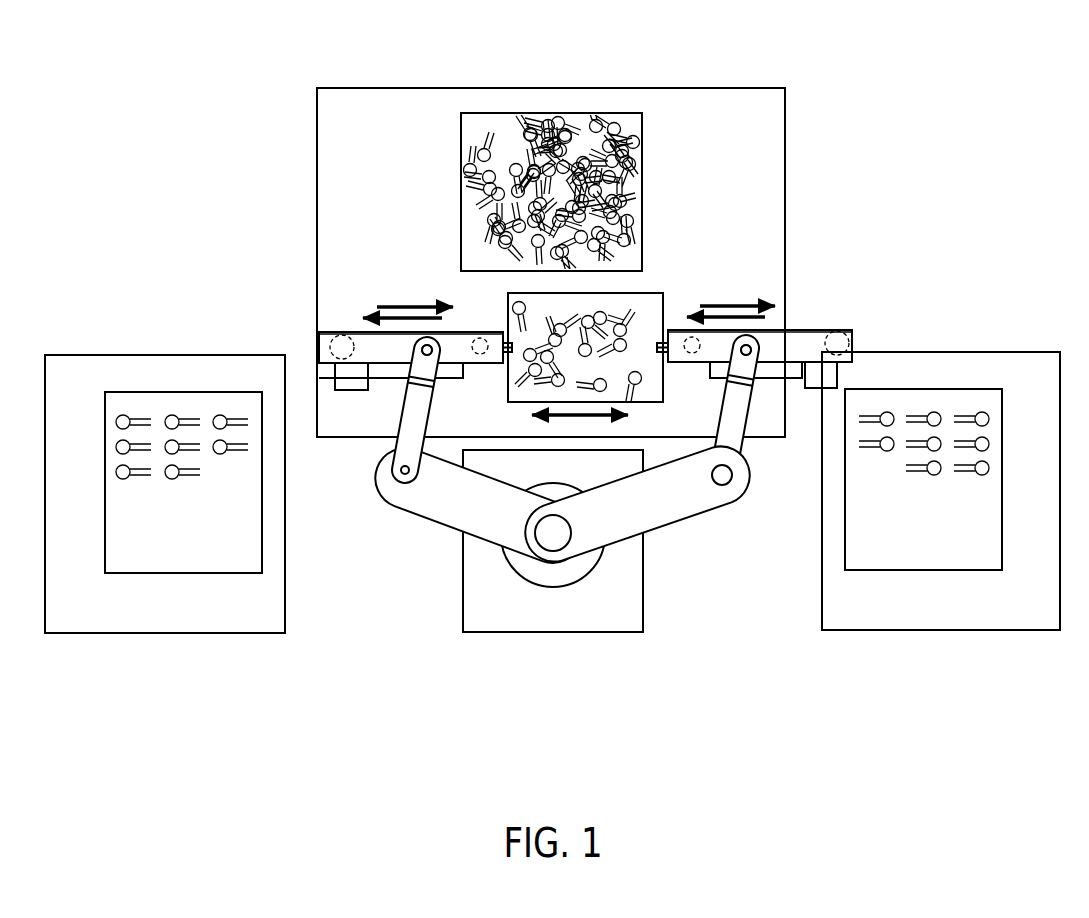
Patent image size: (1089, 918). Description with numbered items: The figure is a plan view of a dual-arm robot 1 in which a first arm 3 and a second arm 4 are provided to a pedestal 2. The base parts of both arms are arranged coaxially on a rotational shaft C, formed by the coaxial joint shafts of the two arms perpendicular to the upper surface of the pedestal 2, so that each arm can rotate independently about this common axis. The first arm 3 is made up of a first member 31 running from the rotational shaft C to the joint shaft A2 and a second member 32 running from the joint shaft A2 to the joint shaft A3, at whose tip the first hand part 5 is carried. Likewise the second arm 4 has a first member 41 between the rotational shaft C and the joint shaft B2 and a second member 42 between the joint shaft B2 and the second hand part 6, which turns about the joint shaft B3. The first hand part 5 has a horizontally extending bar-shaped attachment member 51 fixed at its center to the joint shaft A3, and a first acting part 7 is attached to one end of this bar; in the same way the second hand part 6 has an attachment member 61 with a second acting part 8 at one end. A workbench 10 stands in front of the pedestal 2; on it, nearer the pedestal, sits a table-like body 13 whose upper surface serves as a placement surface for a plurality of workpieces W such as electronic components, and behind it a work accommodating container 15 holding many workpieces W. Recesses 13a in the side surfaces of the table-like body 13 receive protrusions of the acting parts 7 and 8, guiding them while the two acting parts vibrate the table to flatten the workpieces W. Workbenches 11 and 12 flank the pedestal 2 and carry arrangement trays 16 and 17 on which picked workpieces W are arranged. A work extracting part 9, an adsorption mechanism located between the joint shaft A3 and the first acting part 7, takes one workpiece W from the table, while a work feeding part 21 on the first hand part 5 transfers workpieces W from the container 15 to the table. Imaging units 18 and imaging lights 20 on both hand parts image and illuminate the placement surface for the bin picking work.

The robot 1 is at (428, 696).
The pedestal 2 is at (537, 580).
The first arm 3 is at (667, 428).
The second arm 4 is at (447, 421).
The first hand part 5 is at (835, 278).
The second hand part 6 is at (401, 283).
The first acting part 7 is at (672, 370).
The second acting part 8 is at (502, 376).
The work extracting part 9 is at (481, 337).
The workbench 10 is at (746, 100).
The workbench 11 is at (947, 353).
The workbench 12 is at (185, 355).
The table-like body 13 is at (645, 292).
The recess 13a is at (510, 355).
The work accommodating container 15 is at (594, 113).
The arrangement tray 16 is at (937, 572).
The arrangement tray 17 is at (187, 572).
The imaging unit 18 is at (352, 390).
The imaging light 20 is at (392, 378).
The work feeding part 21 is at (338, 337).
The first member 31 is at (680, 512).
The second member 32 is at (735, 415).
The first member 41 is at (437, 512).
The second member 42 is at (417, 415).
The attachment member 51 is at (795, 338).
The attachment member 61 is at (357, 337).
The workpiece W is at (479, 128).
The joint shaft A2 is at (745, 482).
The joint shaft A3 is at (744, 345).
The joint shaft B2 is at (388, 473).
The joint shaft B3 is at (427, 345).
The rotational shaft C is at (553, 540).